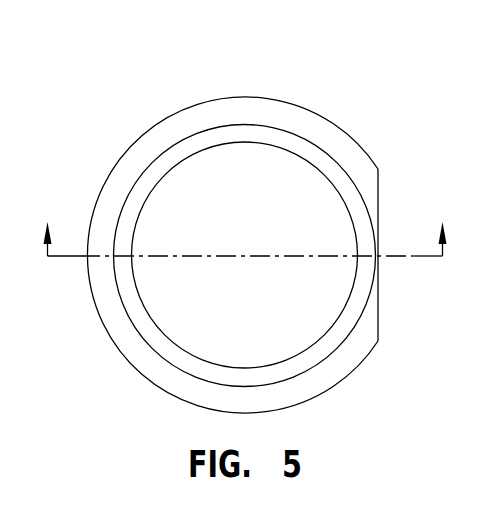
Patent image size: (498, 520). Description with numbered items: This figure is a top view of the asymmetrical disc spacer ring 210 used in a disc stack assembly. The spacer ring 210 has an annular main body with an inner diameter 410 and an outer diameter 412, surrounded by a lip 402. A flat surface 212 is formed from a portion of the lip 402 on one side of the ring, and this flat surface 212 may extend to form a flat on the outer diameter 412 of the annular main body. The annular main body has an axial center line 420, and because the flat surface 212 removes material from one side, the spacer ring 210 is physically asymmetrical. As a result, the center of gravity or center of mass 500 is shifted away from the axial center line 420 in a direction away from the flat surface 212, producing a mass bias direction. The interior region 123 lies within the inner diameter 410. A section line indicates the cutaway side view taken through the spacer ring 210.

The disc spacer ring 210 is at (328, 86).
The lip 402 is at (118, 165).
The flat surface 212 is at (379, 308).
The outer diameter 412 is at (319, 146).
The inner diameter 410 is at (194, 154).
The interior bore 123 is at (245, 255).
The axial center line 420 is at (246, 256).
The center of gravity 500 is at (246, 256).